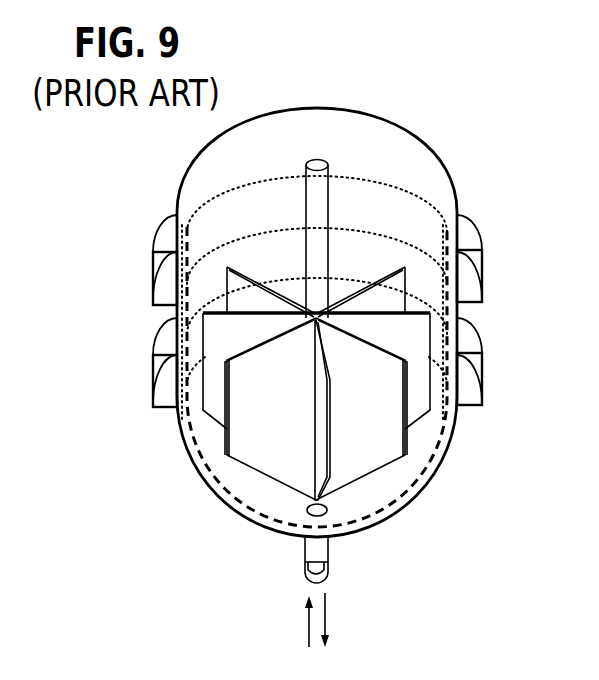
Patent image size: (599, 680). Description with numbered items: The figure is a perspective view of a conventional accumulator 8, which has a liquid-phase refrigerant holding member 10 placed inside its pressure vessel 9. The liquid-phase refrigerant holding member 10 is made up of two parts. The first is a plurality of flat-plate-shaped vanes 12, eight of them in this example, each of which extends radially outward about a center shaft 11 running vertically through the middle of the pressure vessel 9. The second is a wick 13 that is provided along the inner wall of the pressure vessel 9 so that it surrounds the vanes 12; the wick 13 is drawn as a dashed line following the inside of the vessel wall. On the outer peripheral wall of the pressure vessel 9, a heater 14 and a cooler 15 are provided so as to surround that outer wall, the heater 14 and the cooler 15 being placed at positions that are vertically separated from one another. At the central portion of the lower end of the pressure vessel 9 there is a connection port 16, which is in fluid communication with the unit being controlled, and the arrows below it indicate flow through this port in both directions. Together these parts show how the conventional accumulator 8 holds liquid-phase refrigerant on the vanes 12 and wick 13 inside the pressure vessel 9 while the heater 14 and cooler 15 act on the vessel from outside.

The accumulator 8 is at (135, 240).
The pressure vessel 9 is at (408, 125).
The liquid-phase refrigerant holding member 10 is at (383, 258).
The center shaft 11 is at (317, 161).
The flat-plate-shaped vanes 12 is at (270, 403).
The wick 13 is at (244, 505).
The heater 14 is at (464, 280).
The cooler 15 is at (464, 381).
The connection port 16 is at (312, 568).